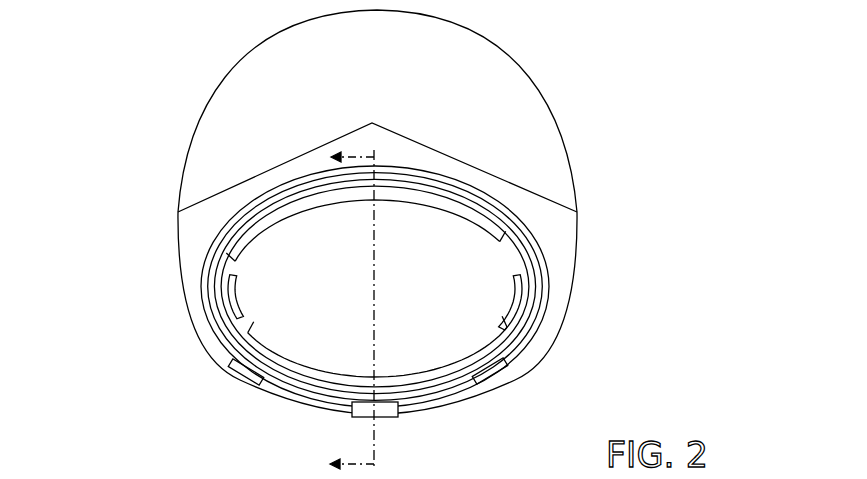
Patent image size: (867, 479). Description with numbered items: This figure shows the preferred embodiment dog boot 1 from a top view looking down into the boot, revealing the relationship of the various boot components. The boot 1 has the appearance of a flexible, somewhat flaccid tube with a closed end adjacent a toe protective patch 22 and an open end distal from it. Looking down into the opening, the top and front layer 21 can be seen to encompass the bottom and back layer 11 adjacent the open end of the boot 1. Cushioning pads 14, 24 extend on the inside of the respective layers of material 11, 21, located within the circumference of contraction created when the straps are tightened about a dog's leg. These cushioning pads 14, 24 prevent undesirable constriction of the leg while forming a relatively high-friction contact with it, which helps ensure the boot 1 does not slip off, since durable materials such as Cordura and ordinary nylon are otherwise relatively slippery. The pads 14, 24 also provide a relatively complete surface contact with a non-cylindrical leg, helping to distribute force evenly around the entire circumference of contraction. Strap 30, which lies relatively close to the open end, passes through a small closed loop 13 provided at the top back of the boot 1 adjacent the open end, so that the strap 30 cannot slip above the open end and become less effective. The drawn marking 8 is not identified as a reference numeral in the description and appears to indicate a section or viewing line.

The boot 1 is at (162, 41).
The toe protective patch 22 is at (517, 83).
The top and front layer 21 is at (573, 262).
The cushioning pad 24 is at (441, 206).
The cushioning pad 14 is at (438, 368).
The strap 30 is at (541, 329).
The bottom and back layer 11 is at (229, 311).
The closed loop 13 is at (366, 417).
The section line 8 is at (343, 309).